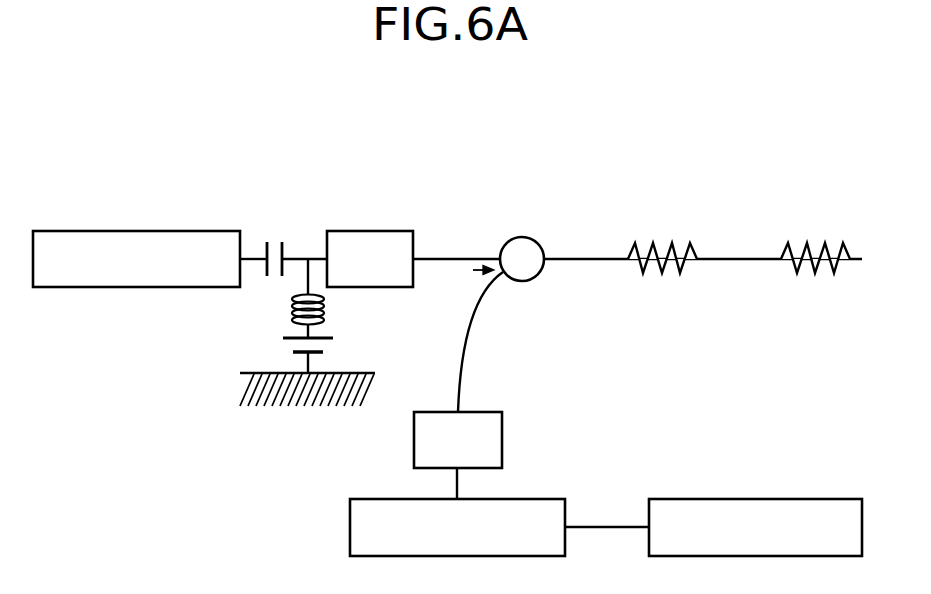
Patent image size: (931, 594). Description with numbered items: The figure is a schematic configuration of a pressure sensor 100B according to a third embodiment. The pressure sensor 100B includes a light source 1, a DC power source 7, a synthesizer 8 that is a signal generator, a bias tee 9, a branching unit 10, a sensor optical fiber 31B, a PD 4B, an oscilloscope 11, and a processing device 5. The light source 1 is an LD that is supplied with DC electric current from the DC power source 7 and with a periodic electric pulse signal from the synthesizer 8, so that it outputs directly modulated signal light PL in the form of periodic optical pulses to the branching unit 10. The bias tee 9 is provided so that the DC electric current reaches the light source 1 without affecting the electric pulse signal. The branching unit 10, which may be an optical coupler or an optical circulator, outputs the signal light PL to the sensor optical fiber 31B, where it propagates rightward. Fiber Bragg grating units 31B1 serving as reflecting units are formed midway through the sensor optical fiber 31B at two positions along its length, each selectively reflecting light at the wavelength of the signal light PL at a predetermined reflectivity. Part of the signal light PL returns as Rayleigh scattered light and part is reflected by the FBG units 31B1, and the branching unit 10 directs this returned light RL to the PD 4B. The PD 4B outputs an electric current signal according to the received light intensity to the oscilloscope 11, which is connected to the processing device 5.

The pressure sensor 100B is at (779, 125).
The synthesizer 8 is at (182, 219).
The bias tee 9 is at (284, 217).
The light source 1 is at (365, 231).
The DC power source 7 is at (258, 340).
The signal light PL is at (468, 236).
The branching unit 10 is at (521, 236).
The returned light RL is at (490, 338).
The PD 4B is at (502, 437).
The oscilloscope 11 is at (530, 487).
The processing device 5 is at (820, 487).
The sensor optical fiber 31B is at (776, 218).
The fiber Bragg grating (FBG) unit 31B1 is at (804, 294).